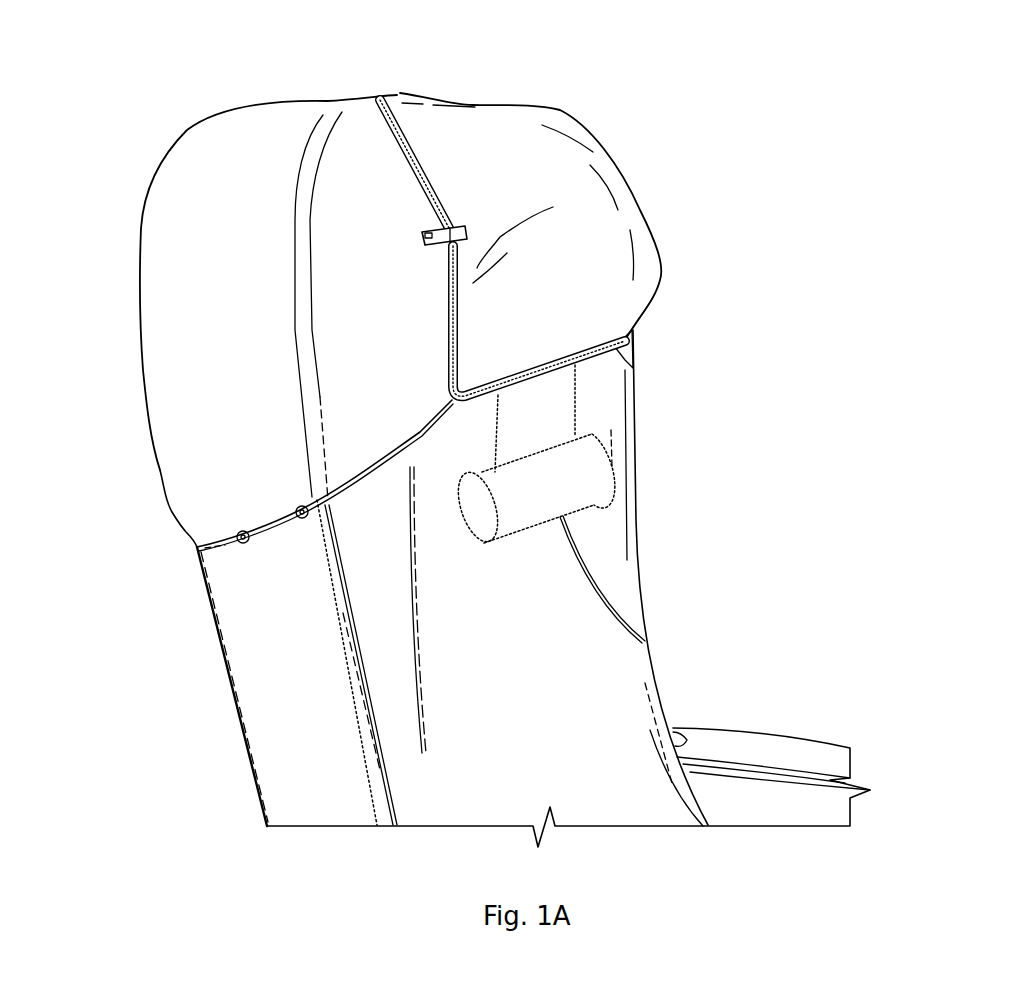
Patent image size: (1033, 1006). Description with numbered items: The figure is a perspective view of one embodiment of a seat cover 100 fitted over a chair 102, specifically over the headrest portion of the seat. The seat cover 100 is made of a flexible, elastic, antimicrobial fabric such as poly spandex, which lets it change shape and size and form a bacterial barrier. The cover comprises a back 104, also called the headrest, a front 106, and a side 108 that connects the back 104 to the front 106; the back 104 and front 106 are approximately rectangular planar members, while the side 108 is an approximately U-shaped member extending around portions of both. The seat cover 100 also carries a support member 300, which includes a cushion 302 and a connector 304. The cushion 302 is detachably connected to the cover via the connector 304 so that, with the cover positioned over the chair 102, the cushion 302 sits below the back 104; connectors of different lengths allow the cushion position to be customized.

The seat cover 100 is at (722, 40).
The chair 102 is at (240, 682).
The back 104 is at (128, 250).
The front 106 is at (487, 130).
The side 108 is at (170, 472).
The support member 300 is at (609, 455).
The cushion 302 is at (612, 485).
The connector 304 is at (575, 405).